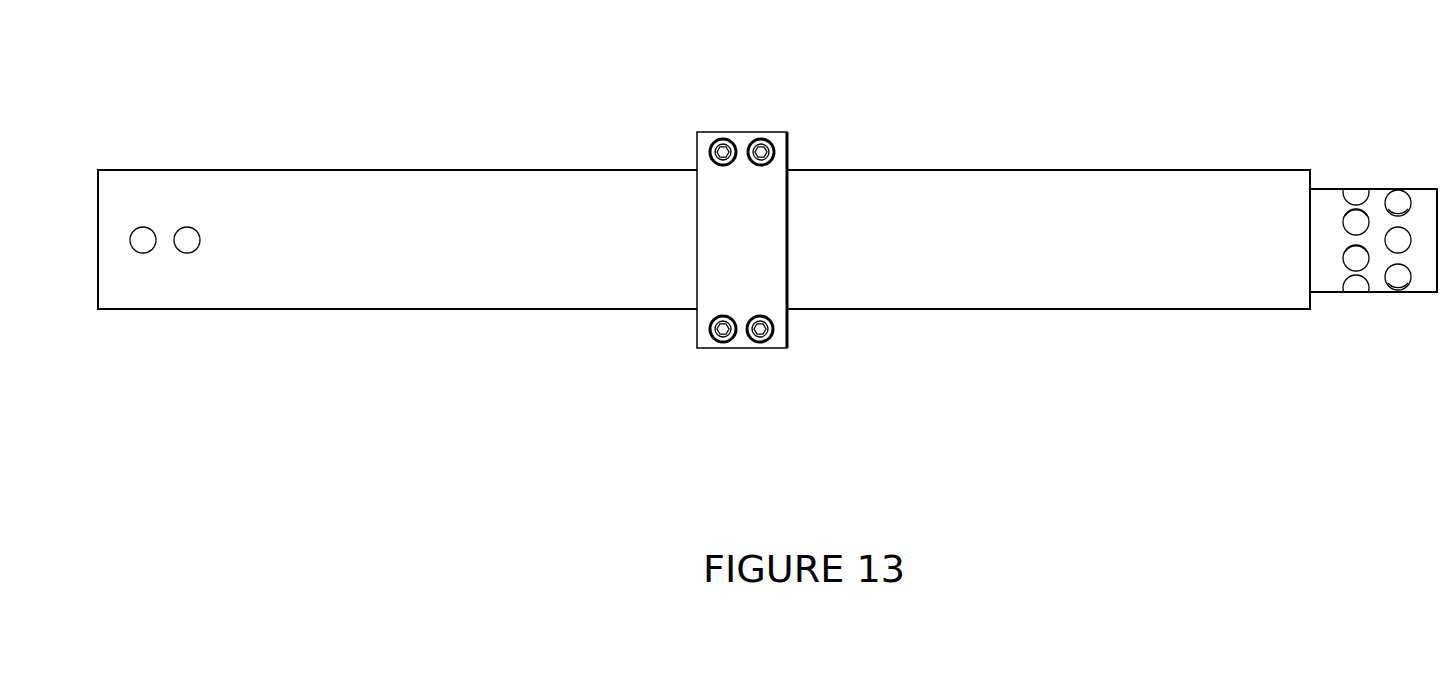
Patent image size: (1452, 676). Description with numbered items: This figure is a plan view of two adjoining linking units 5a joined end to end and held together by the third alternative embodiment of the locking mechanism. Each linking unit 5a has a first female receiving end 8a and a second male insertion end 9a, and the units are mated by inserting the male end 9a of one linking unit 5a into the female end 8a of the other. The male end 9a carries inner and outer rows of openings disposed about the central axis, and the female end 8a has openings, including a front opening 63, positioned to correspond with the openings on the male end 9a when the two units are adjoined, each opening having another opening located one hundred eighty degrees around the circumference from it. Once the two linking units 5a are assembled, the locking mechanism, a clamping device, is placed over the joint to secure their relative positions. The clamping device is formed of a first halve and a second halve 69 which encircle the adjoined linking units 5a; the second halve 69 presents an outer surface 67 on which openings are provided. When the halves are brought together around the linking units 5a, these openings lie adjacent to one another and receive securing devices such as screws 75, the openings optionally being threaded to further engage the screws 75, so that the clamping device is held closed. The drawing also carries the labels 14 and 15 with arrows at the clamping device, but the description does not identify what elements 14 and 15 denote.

The linking unit 5a is at (703, 178).
The first female receiving end 8a is at (128, 170).
The second male insertion end 9a is at (1427, 198).
The fastener 14 is at (743, 120).
The bolt 15 is at (761, 140).
The front opening 63 is at (685, 243).
The outer surface of second halve 67 is at (713, 294).
The second halve 69 is at (697, 140).
The screw 75 is at (773, 326).